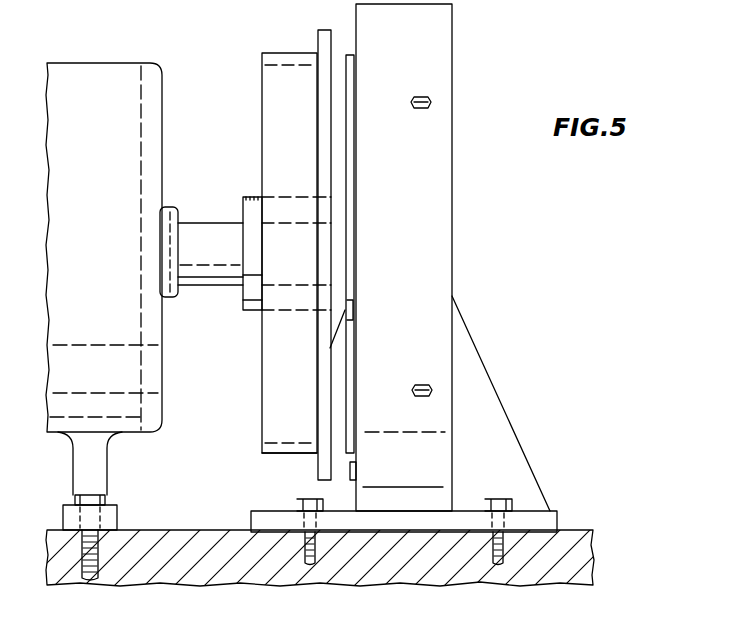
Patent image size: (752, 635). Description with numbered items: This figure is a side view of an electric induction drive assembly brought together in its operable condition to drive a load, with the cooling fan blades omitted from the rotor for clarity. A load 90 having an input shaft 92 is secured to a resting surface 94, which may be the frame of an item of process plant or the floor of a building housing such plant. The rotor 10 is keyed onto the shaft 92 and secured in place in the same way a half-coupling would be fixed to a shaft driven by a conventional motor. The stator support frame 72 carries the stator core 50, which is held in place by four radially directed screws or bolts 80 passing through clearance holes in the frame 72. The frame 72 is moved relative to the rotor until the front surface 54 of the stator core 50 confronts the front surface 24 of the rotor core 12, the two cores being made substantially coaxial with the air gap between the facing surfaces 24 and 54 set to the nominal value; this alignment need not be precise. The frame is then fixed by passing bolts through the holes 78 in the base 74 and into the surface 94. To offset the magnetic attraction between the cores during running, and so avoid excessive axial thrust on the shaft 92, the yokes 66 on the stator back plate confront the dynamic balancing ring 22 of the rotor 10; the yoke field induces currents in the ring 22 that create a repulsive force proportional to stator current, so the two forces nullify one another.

The rotor 10 is at (255, 96).
The rotor core 12 is at (272, 372).
The dynamic balancing ring 22 is at (285, 458).
The front surface of the rotor core 24 is at (333, 103).
The stator core 50 is at (352, 298).
The front surface of the stator core 54 is at (348, 183).
The yokes 66 is at (358, 470).
The frame 72 is at (445, 33).
The base 74 is at (545, 523).
The holes 78 is at (255, 519).
The screws or bolts 80 is at (432, 103).
The load 90 is at (112, 262).
The input shaft 92 is at (192, 230).
The resting surface 94 is at (158, 574).